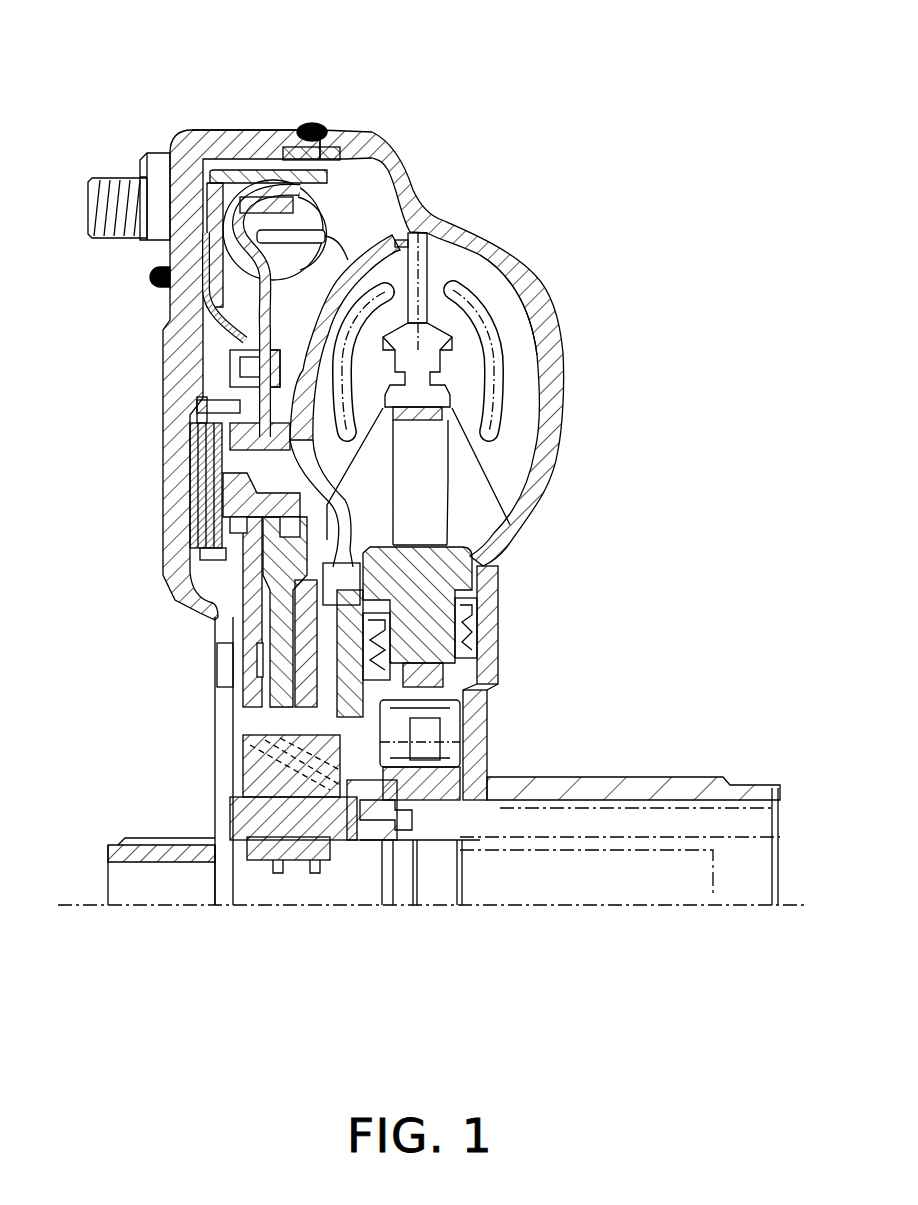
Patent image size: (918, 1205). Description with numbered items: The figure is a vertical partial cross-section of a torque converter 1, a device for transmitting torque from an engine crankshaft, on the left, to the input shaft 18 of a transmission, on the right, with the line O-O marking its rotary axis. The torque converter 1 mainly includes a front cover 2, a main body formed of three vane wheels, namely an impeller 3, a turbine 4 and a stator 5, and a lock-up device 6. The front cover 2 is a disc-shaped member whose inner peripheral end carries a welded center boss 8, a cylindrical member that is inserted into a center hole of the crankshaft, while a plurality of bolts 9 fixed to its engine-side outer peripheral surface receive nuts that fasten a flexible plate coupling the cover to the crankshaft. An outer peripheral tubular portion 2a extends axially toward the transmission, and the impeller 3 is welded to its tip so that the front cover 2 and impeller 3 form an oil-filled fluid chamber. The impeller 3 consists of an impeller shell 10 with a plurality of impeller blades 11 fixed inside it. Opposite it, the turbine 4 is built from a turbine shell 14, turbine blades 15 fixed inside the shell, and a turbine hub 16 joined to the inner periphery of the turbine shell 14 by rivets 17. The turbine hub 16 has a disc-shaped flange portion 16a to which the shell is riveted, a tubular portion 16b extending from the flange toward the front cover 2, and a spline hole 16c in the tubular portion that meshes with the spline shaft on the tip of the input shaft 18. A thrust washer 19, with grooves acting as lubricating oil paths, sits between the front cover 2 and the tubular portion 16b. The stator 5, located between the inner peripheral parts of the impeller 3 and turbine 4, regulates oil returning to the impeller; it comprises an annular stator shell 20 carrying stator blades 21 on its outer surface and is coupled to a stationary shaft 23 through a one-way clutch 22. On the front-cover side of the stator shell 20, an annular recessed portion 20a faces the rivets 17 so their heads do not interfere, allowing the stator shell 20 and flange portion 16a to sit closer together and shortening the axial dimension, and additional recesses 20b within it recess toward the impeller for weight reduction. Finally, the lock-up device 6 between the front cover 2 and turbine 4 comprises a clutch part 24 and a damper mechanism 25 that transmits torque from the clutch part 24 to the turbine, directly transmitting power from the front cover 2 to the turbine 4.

The torque converter 1 is at (432, 504).
The front cover 2 is at (160, 440).
The outer peripheral tubular portion 2a is at (265, 130).
The impeller 3 is at (492, 407).
The turbine 4 is at (394, 335).
The stator 5 is at (465, 508).
The lock-up device 6 is at (214, 178).
The center boss 8 is at (137, 848).
The bolts 9 is at (122, 178).
The impeller shell 10 is at (557, 363).
The impeller blades 11 is at (520, 344).
The turbine shell 14 is at (400, 278).
The turbine blades 15 is at (505, 328).
The turbine hub 16 is at (418, 824).
The flange portion 16a is at (460, 690).
The tubular portion 16b is at (288, 810).
The spline hole 16c is at (366, 855).
The rivets 17 is at (320, 582).
The input shaft 18 is at (660, 880).
The thrust washer 19 is at (225, 810).
The stator shell 20 is at (489, 600).
The annular recessed portion 20a is at (463, 550).
The recesses 20b is at (470, 620).
The stator blades 21 is at (440, 470).
The one-way clutch 22 is at (470, 745).
The stationary shaft 23 is at (623, 820).
The clutch part 24 is at (229, 578).
The damper mechanism 25 is at (350, 198).